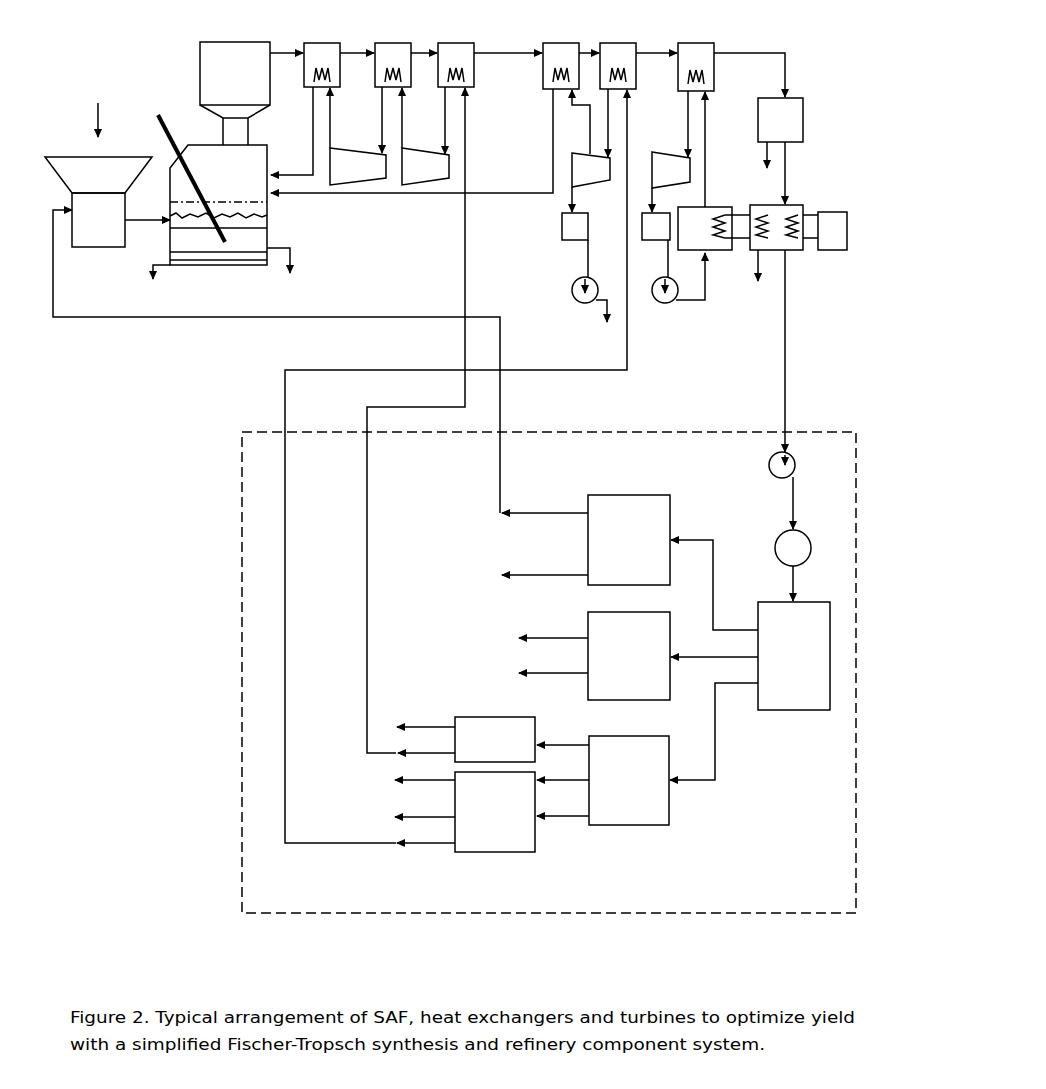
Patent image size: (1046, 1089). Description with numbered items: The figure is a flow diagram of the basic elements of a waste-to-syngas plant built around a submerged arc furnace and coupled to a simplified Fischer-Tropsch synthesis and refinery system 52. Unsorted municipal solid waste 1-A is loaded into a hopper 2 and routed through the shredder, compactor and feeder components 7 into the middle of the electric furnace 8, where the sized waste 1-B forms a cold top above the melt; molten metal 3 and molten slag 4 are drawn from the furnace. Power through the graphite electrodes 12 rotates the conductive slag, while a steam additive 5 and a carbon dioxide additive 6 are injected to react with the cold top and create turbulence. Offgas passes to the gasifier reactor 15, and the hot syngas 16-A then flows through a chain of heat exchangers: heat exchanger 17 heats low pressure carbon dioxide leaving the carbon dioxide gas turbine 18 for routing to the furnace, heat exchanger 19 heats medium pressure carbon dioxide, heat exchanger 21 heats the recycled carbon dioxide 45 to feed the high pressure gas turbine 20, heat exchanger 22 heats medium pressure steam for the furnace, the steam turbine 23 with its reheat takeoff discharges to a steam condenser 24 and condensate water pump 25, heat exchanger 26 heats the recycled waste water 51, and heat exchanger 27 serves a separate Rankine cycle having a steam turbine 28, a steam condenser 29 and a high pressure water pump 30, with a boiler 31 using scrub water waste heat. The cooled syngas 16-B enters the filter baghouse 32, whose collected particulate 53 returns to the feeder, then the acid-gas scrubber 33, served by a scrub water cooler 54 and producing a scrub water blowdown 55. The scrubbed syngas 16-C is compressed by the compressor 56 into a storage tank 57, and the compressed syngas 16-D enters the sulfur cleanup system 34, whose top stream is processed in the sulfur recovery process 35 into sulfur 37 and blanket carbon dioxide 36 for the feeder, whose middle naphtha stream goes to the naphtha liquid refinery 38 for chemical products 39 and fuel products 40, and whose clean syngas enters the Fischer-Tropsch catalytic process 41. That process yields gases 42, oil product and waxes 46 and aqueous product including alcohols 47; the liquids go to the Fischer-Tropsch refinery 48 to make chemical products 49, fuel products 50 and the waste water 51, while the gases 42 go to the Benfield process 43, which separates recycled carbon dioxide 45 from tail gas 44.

The unsorted MSW feedstock 1-A is at (82, 120).
The sized MSW 1-B is at (147, 234).
The hopper 2 is at (98, 175).
The molten metal 3 is at (156, 287).
The molten slag 4 is at (282, 276).
The recycled steam additive 5 is at (234, 212).
The recycled CO2 additive 6 is at (292, 132).
The shredder, compactor and feeder components 7 is at (98, 220).
The electric furnace in SAF configuration 8 is at (270, 157).
The graphite electrodes 12 is at (180, 173).
The gasifier reactor 15 is at (235, 93).
The syngas 16-A is at (289, 44).
The cooled syngas 16-B is at (775, 71).
The scrubbed syngas 16-C is at (809, 351).
The compressed syngas 16-D is at (814, 583).
The heat exchanger HX1 17 is at (339, 65).
The CO2 gas turbine GT1 18 is at (358, 137).
The heat exchanger HX2 19 is at (406, 65).
The high pressure CO2 gas turbine 20 is at (425, 137).
The heat exchanger HX3 21 is at (490, 65).
The heat exchanger HX8 22 is at (435, 118).
The steam turbine ST2 23 is at (591, 150).
The steam condenser 24 is at (575, 227).
The condensate water pump 25 is at (578, 281).
The heat exchanger HX9 26 is at (638, 66).
The heat exchanger HX10 27 is at (696, 67).
The steam turbine for separate Rankine cycle 28 is at (678, 151).
The steam condenser 29 is at (656, 227).
The water pump 30 is at (673, 282).
The boiler 31 is at (714, 228).
The filter baghouse 32 is at (780, 151).
The acid-gas scrubber 33 is at (784, 227).
The Rectisol or equivalent S-cleanup system 34 is at (750, 660).
The Sulfolin or equivalent S-recovery process 35 is at (629, 540).
The CO2 blanket gas 36 is at (320, 361).
The sulfur 37 is at (545, 564).
The naphtha liquid refinery 38 is at (629, 656).
The chemical products 39 is at (553, 630).
The fuel products 40 is at (553, 665).
The Fe-LTFT catalytic process 41 is at (629, 780).
The gases 42 is at (563, 736).
The Benfield or equivalent process 43 is at (495, 739).
The tail gas 44 is at (426, 718).
The recycled CO2 45 is at (432, 421).
The oil product and waxes 46 is at (563, 771).
The aqueous product including alcohols 47 is at (563, 807).
The Fischer-Tropsch refinery 48 is at (495, 812).
The chemical products 49 is at (425, 771).
The fuel products 50 is at (425, 807).
The FTP waste water for recycling 51 is at (456, 481).
The simplified Fischer-Tropsch synthesis and refinery system 52 is at (237, 563).
The particulate collected 53 is at (758, 169).
The scrub water cooler 54 is at (832, 231).
The scrub water blowdown 55 is at (752, 280).
The compressor 56 is at (772, 490).
The storage tank 57 is at (805, 546).